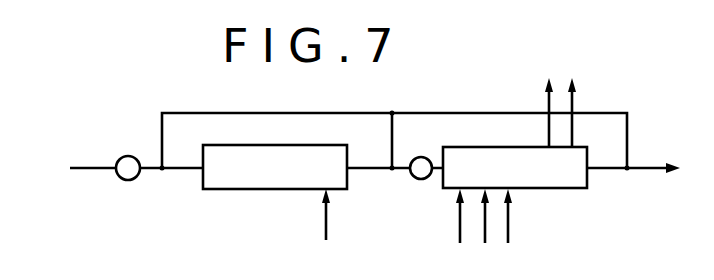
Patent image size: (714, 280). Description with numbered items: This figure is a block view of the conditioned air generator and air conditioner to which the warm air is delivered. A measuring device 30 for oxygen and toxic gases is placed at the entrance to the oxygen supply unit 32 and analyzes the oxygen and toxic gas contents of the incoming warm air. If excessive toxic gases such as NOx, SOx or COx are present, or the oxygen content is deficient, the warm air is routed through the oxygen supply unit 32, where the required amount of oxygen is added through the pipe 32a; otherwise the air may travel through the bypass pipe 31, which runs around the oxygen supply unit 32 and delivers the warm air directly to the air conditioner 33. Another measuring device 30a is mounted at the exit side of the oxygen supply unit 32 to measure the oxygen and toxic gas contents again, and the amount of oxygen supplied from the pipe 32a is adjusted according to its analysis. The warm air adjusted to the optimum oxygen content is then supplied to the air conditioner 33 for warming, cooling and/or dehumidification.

The measuring device 30 is at (127, 156).
The measuring device 30a is at (415, 180).
The bypass pipe 31 is at (307, 92).
The oxygen supply unit 32 is at (243, 190).
The pipe 32a is at (328, 216).
The air conditioner 33 is at (559, 190).